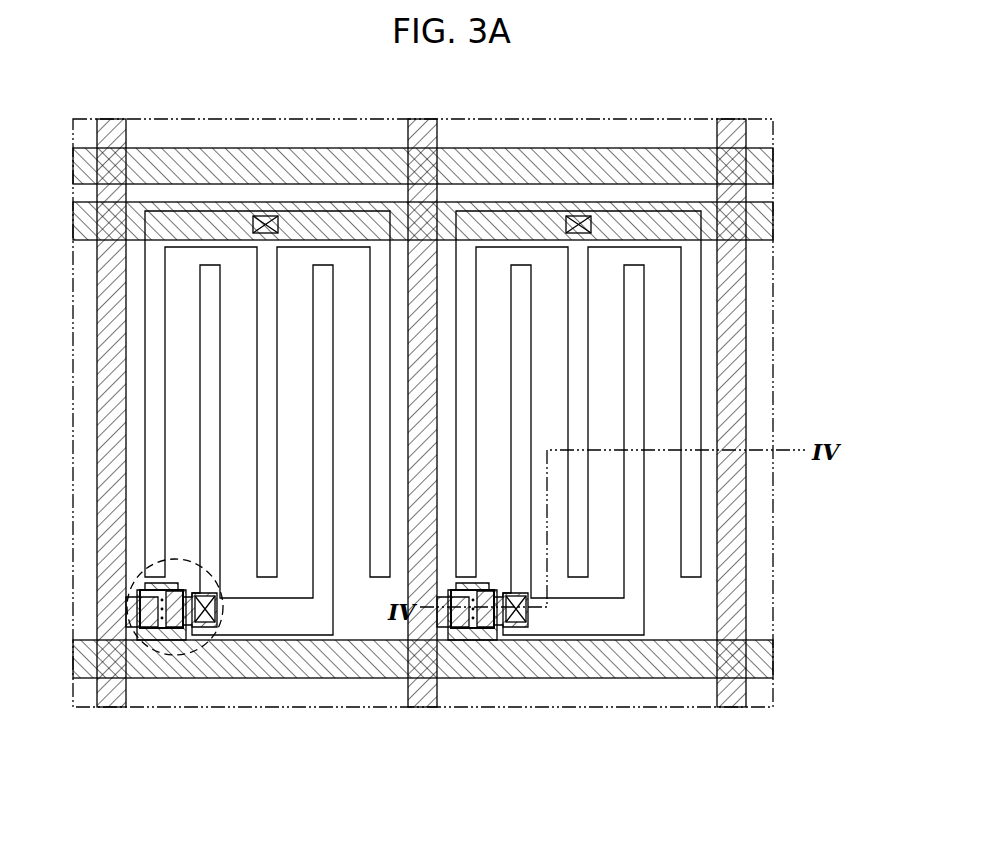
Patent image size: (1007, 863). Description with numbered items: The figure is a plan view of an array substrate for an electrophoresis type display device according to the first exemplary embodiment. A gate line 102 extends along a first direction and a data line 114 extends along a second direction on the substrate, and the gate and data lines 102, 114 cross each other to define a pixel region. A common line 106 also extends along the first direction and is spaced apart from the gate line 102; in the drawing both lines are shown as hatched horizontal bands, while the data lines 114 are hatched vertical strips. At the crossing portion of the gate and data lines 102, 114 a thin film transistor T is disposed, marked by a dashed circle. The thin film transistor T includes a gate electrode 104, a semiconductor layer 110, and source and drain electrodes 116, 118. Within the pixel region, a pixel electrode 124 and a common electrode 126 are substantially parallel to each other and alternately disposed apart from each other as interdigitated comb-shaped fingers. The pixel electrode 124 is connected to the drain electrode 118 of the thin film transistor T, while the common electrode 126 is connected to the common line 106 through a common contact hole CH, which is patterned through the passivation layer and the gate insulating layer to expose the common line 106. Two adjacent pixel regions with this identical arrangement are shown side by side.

The gate line 102 is at (791, 148).
The gate electrode 104 is at (173, 587).
The common line 106 is at (791, 202).
The semiconductor layer 110 is at (167, 632).
The data line 114 is at (126, 111).
The source electrode 116 is at (132, 628).
The drain electrode 118 is at (210, 630).
The pixel electrode 124 is at (643, 376).
The common electrode 126 is at (702, 552).
The common contact hole CH is at (268, 215).
The thin film transistor T is at (125, 614).